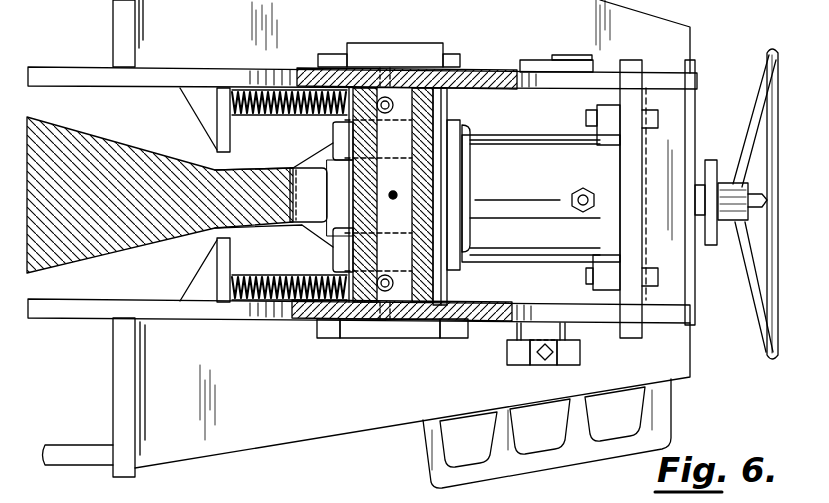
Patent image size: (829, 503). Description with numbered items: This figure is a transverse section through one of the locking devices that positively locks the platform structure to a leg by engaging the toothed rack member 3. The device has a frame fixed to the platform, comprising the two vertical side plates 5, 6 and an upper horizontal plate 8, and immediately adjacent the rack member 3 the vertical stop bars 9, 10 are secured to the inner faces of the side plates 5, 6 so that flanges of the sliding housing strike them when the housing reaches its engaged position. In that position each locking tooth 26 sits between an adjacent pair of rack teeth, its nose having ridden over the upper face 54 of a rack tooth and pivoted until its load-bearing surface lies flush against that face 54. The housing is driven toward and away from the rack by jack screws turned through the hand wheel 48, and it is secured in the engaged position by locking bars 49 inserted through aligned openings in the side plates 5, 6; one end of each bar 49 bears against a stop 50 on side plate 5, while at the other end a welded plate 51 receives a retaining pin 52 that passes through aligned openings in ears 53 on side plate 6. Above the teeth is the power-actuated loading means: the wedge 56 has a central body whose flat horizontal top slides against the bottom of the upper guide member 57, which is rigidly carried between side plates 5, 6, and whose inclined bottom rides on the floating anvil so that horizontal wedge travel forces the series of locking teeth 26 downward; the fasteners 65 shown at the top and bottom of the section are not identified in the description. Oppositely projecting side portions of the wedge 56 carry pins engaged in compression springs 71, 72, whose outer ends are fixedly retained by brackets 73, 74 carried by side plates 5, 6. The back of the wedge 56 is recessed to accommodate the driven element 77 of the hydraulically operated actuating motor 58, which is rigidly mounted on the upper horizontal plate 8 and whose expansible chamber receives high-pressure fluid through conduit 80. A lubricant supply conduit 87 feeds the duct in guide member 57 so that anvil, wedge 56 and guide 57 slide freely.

The rack member 3 is at (113, 152).
The vertical side plate 5 is at (72, 79).
The vertical side plate 6 is at (74, 318).
The upper horizontal plate 8 is at (672, 284).
The vertical stop bar 9 is at (333, 128).
The vertical stop bar 10 is at (338, 265).
The locking tooth 26 is at (290, 240).
The hand wheel 48 is at (772, 50).
The locking bar 49 is at (575, 344).
The stop 50 is at (560, 58).
The plate 51 is at (506, 352).
The retaining pin 52 is at (538, 366).
The ear 53 is at (548, 362).
The upper face of rack tooth 54 is at (302, 202).
The wedge 56 is at (460, 275).
The upper guide member 57 is at (433, 44).
The hydraulically operated actuating motor 58 is at (540, 182).
The clamp bolts 65 is at (385, 66).
The compression spring 71 is at (258, 112).
The compression spring 72 is at (250, 272).
The bracket 73 is at (218, 126).
The bracket 74 is at (218, 290).
The driven element 77 is at (460, 168).
The conduit 80 is at (582, 188).
The lubricant supply conduit 87 is at (393, 182).